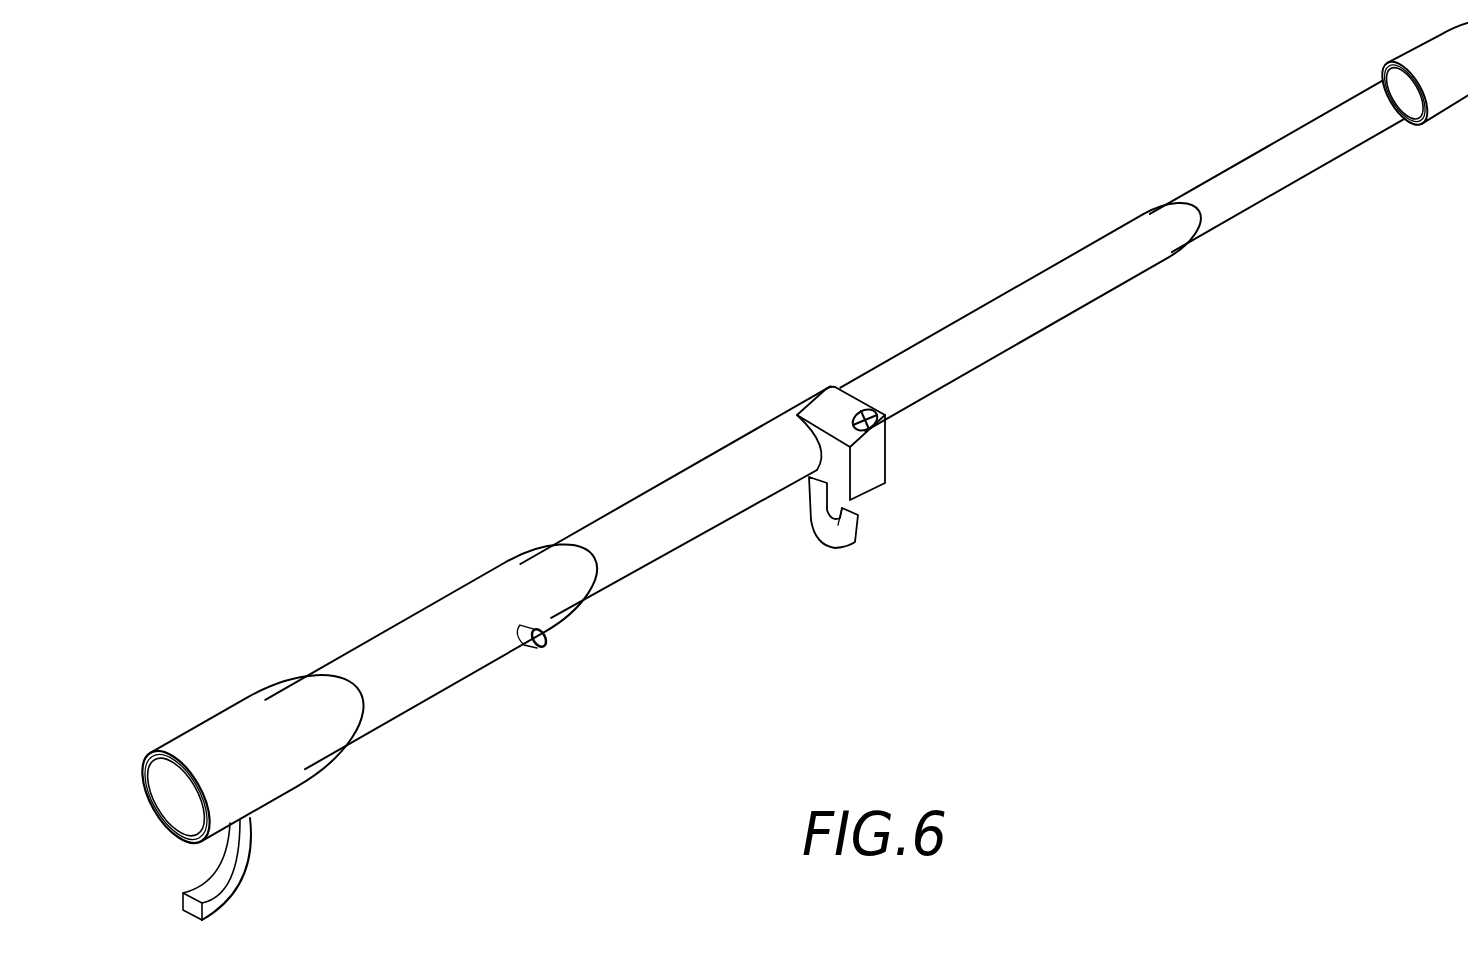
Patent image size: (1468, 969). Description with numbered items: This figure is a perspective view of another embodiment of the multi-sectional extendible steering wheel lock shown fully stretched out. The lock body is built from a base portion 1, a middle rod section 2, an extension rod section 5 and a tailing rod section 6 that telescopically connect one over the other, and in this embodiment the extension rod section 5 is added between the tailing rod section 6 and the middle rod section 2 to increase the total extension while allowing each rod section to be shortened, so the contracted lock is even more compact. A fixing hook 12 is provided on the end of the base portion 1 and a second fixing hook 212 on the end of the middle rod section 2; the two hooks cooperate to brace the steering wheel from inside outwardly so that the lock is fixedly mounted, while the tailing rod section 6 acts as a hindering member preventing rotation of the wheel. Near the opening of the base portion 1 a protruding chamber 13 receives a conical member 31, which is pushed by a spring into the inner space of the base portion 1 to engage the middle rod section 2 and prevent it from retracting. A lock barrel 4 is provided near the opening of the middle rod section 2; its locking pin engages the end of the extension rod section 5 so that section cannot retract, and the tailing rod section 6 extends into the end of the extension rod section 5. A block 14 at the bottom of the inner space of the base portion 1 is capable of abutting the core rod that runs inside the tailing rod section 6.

The base portion 1 is at (368, 718).
The fixing hook 12 is at (240, 857).
The protruding chamber 13 is at (525, 648).
The block 14 is at (170, 803).
The middle rod section 2 is at (715, 475).
The fixing hook 212 is at (817, 507).
The conical member 31 is at (550, 628).
The lock barrel 4 is at (887, 410).
The extension rod section 5 is at (930, 343).
The tailing rod section 6 is at (1200, 215).